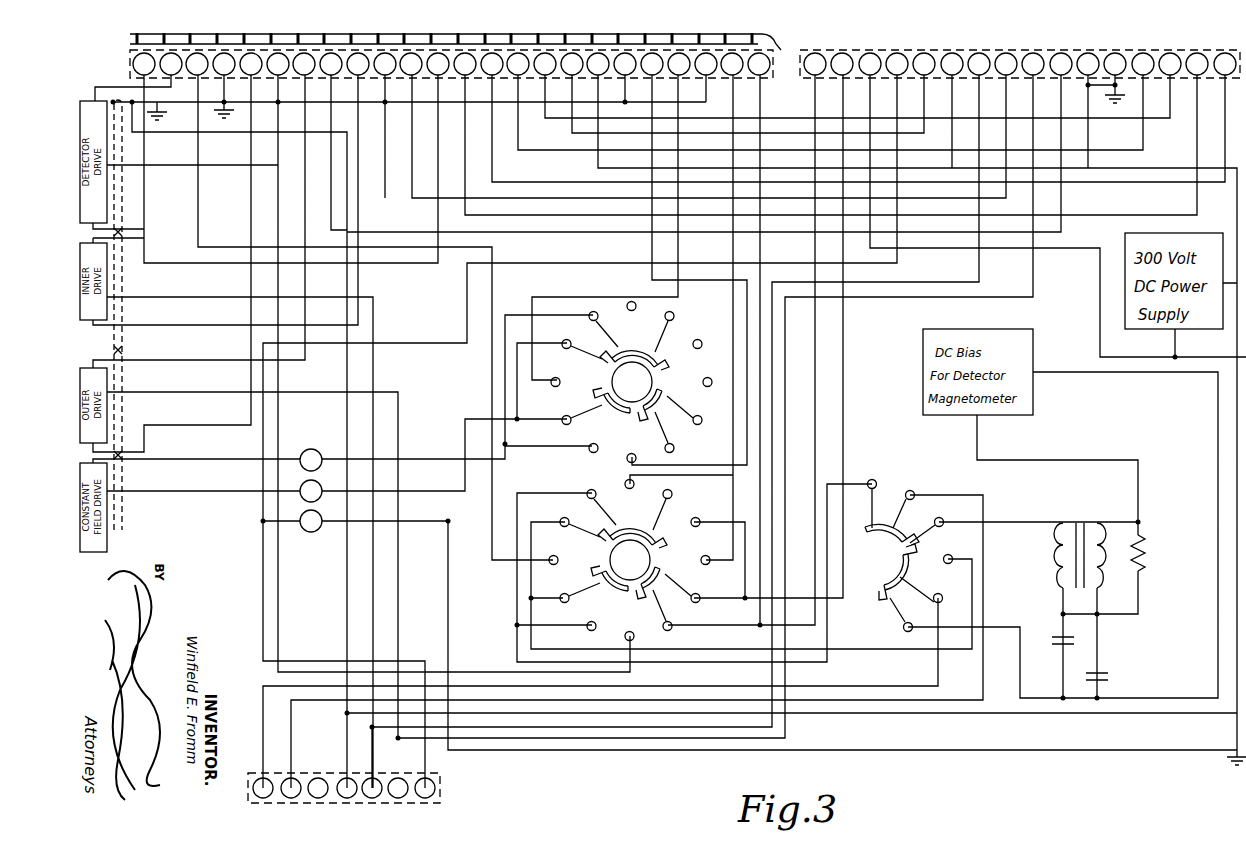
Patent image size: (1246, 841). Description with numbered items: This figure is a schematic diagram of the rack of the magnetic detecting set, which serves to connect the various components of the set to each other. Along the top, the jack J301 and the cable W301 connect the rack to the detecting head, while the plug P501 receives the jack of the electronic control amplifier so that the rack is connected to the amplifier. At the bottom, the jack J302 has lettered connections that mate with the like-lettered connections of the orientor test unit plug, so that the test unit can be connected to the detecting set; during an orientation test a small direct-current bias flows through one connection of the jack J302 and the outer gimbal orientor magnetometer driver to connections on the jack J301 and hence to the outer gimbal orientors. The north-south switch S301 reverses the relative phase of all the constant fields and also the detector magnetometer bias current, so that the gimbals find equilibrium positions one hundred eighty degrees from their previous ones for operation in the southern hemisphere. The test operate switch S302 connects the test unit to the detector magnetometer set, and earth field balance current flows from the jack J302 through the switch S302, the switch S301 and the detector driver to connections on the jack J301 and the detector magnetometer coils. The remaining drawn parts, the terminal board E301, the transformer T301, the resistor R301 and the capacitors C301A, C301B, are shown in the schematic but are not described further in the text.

The cable W301 is at (102, 40).
The jack J301 is at (781, 50).
The plug P501 is at (1020, 57).
The terminal board E301 is at (310, 482).
The north-south switch S301 is at (633, 472).
The test operate switch S302 is at (903, 556).
The transformer T301 is at (1080, 544).
The resistor R301 is at (1157, 553).
The capacitor C301A is at (1076, 642).
The capacitor C301B is at (1110, 678).
The jack J302 is at (344, 798).